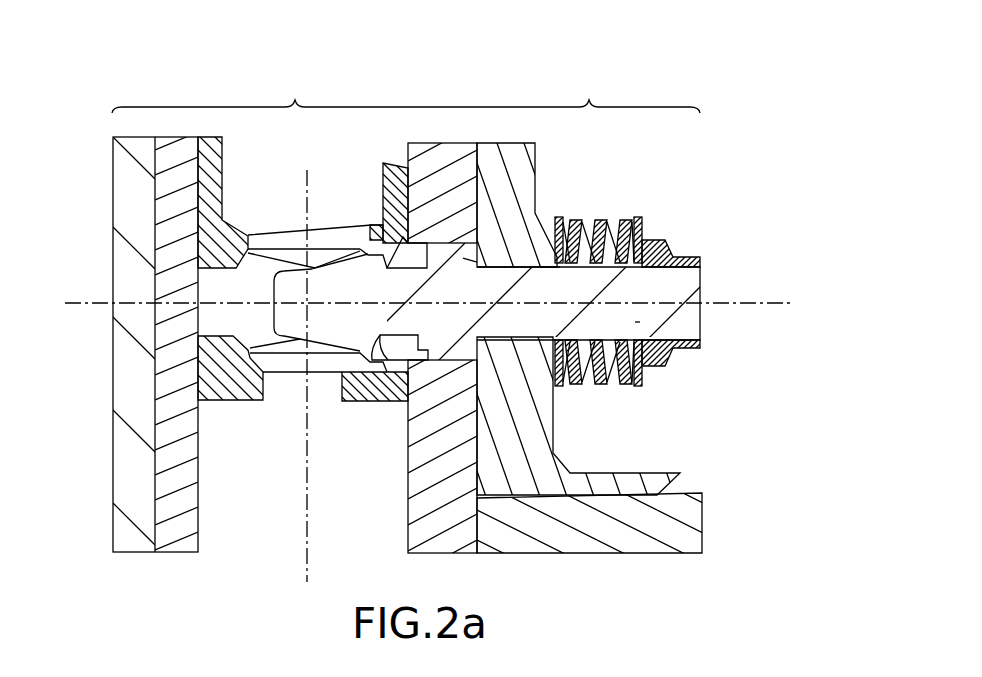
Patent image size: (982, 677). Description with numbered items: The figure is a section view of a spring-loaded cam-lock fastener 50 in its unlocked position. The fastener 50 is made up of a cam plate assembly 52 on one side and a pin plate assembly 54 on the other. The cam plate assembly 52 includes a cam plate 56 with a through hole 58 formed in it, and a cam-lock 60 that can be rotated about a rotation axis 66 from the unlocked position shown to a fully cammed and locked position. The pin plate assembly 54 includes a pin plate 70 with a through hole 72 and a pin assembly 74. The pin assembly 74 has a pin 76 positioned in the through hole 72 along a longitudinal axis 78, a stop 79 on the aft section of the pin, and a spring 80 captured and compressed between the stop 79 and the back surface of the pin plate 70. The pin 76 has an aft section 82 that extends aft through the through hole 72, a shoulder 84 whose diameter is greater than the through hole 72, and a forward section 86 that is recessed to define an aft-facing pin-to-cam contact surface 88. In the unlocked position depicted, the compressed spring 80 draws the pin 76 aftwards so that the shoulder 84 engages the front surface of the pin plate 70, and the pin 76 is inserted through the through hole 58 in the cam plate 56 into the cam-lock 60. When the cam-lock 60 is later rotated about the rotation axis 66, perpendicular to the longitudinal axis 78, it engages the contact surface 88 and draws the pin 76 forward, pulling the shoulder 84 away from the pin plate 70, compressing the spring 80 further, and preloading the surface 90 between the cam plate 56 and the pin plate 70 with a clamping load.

The spring-loaded cam-lock fastener 50 is at (114, 80).
The cam plate assembly 52 is at (293, 94).
The pin plate assembly 54 is at (587, 94).
The cam plate 56 is at (410, 510).
The through hole 58 is at (393, 342).
The cam-lock 60 is at (320, 224).
The rotation axis 66 is at (305, 538).
The pin plate 70 is at (537, 180).
The through hole 72 is at (550, 267).
The pin assembly 74 is at (714, 180).
The pin 76 is at (690, 306).
The longitudinal axis 78 is at (788, 304).
The stop 79 is at (663, 243).
The spring 80 is at (617, 227).
The aft section 82 is at (635, 322).
The shoulder 84 is at (463, 258).
The forward section 86 is at (378, 315).
The pin-to-cam contact surface 88 is at (408, 346).
The surface 90 is at (475, 190).